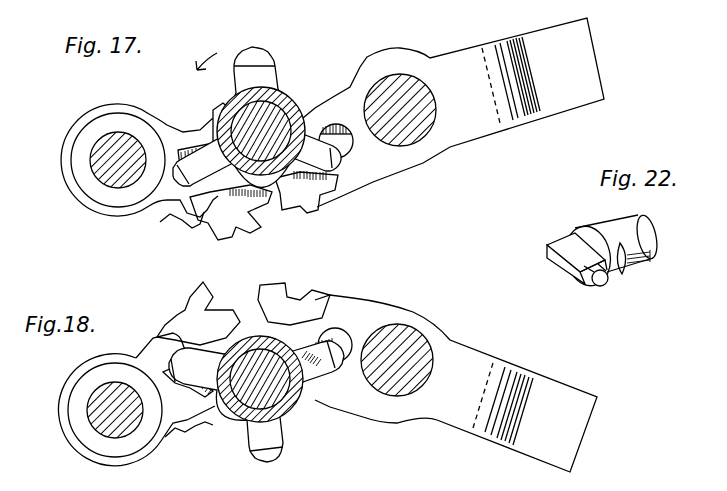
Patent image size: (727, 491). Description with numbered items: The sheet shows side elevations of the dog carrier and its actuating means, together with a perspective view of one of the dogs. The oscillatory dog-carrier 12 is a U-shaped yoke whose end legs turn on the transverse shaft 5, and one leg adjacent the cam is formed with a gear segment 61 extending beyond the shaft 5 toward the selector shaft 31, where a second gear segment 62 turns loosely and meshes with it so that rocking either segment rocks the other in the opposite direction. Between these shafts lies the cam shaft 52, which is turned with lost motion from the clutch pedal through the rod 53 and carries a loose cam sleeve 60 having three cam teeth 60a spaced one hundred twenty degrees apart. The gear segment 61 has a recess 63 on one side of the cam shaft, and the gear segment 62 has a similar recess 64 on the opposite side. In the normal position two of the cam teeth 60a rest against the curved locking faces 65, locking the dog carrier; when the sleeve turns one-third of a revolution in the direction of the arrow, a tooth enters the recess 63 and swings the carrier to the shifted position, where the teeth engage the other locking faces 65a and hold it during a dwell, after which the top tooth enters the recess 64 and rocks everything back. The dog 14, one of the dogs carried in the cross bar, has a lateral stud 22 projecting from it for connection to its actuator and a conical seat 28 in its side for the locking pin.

In FIG. 17, the shaft 5 is at (437, 122).
In FIG. 18, the shaft 5 is at (407, 397).
In FIG. 17, the dog-carrier 12 is at (453, 112).
In FIG. 18, the dog-carrier 12 is at (456, 383).
In FIG. 22, the dog 14 is at (603, 246).
In FIG. 22, the lateral stud 22 is at (602, 288).
In FIG. 22, the conical seat 28 is at (622, 275).
In FIG. 17, the selector shaft 31 is at (92, 157).
In FIG. 18, the selector shaft 31 is at (88, 406).
In FIG. 17, the cam shaft 52 is at (292, 100).
In FIG. 18, the cam shaft 52 is at (237, 412).
In FIG. 17, the rod 53 is at (227, 112).
In FIG. 18, the rod 53 is at (260, 378).
In FIG. 17, the cam sleeve 60 is at (273, 92).
In FIG. 18, the cam sleeve 60 is at (290, 415).
In FIG. 17, the cam teeth 60a is at (257, 62).
In FIG. 18, the cam teeth 60a is at (253, 395).
In FIG. 17, the gear segment 61 is at (300, 207).
In FIG. 18, the gear segment 61 is at (294, 304).
In FIG. 17, the gear segment 62 is at (231, 212).
In FIG. 18, the gear segment 62 is at (170, 398).
In FIG. 17, the recess 63 is at (352, 150).
In FIG. 18, the recess 63 is at (342, 345).
In FIG. 17, the recess 64 is at (183, 140).
In FIG. 18, the recess 64 is at (188, 382).
In FIG. 17, the locking faces 65 is at (172, 213).
In FIG. 18, the locking faces 65 is at (190, 413).
In FIG. 17, the locking faces 65a is at (198, 140).
In FIG. 18, the locking faces 65a is at (181, 348).